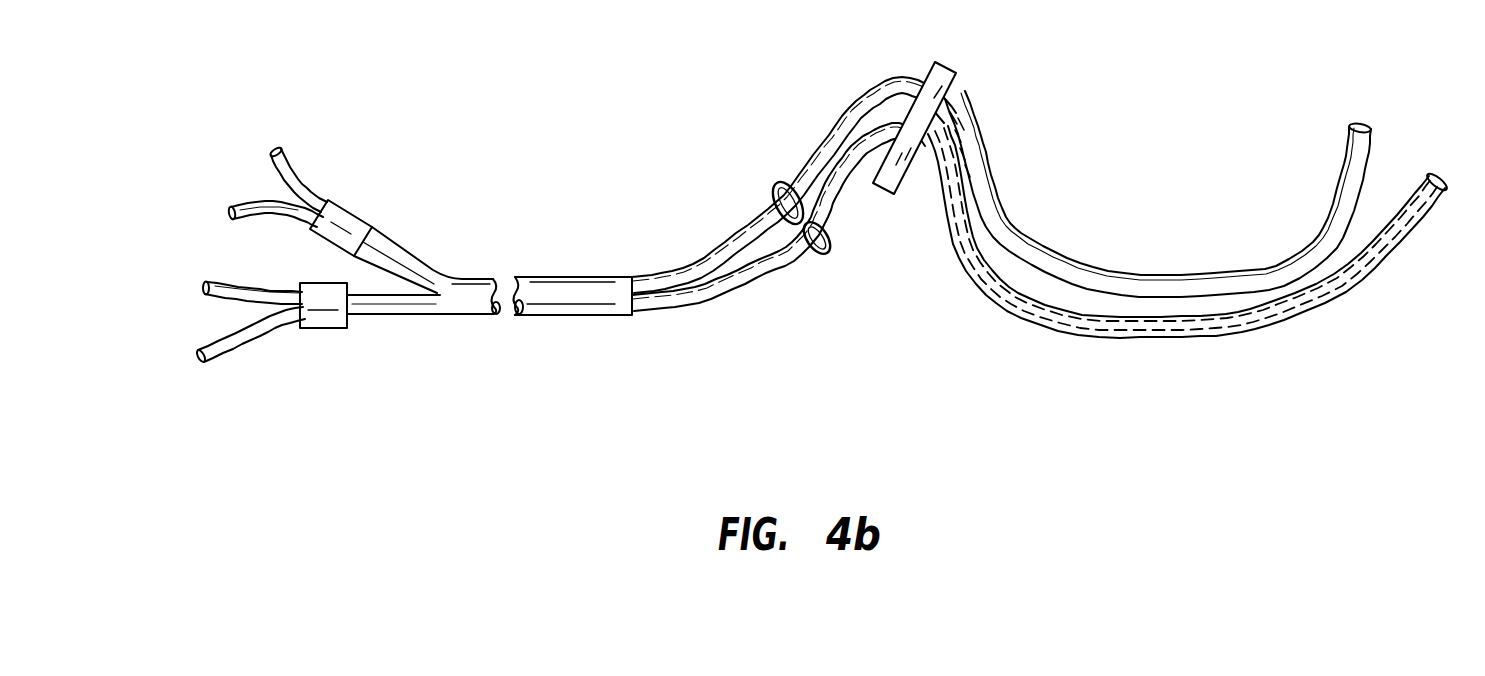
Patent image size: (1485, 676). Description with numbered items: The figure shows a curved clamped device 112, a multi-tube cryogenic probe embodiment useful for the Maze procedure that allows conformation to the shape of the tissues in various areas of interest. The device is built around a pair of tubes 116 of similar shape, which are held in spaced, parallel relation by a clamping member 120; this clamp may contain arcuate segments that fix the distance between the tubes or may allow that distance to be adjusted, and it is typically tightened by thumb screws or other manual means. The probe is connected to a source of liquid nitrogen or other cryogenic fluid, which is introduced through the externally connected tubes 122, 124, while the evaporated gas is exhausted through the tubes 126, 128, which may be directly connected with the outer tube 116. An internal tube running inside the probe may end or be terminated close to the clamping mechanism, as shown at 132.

The curved clamped device 112 is at (772, 197).
The pair of tubes 116 is at (1435, 173).
The clamping member 120 is at (957, 77).
The externally connected tube 122 is at (222, 353).
The externally connected tube 124 is at (245, 206).
The exhaust tube 126 is at (220, 282).
The exhaust tube 128 is at (297, 173).
The internal tube termination 132 is at (973, 150).